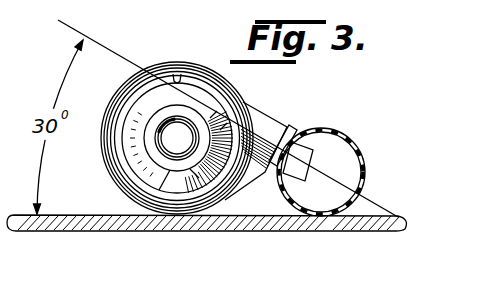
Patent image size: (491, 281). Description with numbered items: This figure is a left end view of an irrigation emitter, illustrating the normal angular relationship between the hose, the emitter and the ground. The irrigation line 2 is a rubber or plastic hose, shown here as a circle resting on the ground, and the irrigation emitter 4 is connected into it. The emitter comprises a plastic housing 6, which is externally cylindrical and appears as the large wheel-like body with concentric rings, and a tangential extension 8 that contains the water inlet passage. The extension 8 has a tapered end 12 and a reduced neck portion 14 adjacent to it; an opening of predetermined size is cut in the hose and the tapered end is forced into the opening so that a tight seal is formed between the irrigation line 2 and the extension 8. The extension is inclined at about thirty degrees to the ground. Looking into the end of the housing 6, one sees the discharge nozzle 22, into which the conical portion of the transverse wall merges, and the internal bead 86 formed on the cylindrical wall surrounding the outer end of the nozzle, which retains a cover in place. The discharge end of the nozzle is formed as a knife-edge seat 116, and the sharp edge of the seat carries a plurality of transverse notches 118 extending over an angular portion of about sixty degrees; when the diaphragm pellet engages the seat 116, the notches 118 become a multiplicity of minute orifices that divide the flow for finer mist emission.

The irrigation line 2 is at (355, 141).
The irrigation emitter 4 is at (152, 64).
The housing 6 is at (115, 92).
The tangential extension 8 is at (263, 123).
The tapered end 12 is at (296, 180).
The reduced neck portion 14 is at (297, 137).
The discharge nozzle 22 is at (163, 166).
The internal bead 86 is at (178, 74).
The knife-edge seat 116 is at (157, 150).
The transverse notches 118 is at (174, 118).